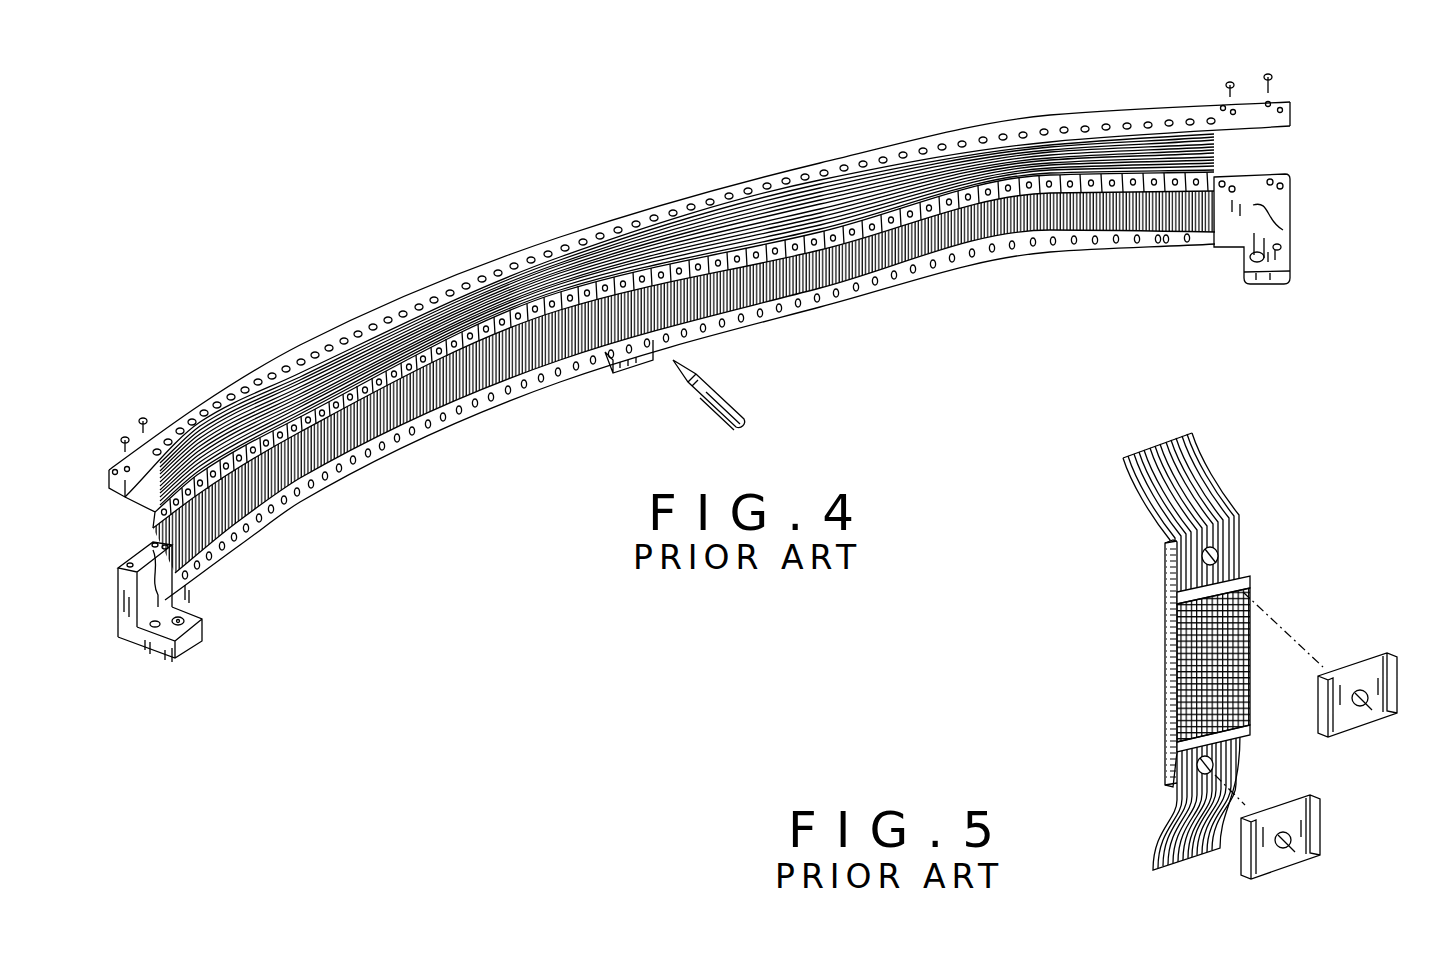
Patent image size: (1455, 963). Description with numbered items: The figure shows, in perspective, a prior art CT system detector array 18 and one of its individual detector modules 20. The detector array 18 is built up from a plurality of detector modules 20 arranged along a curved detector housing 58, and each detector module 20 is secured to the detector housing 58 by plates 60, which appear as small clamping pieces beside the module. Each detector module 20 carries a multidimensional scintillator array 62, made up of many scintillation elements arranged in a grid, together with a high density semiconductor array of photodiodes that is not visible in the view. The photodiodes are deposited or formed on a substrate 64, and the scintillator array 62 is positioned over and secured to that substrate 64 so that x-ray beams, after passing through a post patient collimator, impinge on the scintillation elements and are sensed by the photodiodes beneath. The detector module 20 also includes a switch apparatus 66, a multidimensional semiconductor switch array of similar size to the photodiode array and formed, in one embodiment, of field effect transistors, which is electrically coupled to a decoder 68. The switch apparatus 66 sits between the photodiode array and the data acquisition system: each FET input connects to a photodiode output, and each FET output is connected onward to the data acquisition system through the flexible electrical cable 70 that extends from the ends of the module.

In FIG. 4, the detector array 18 is at (656, 170).
In FIG. 4, the detector housing 58 is at (573, 232).
In FIG. 4, the detector module 20 is at (857, 268).
In FIG. 5, the detector module 20 is at (1323, 607).
In FIG. 5, the plate 60 is at (1396, 692).
In FIG. 5, the scintillator array 62 is at (1260, 636).
In FIG. 5, the substrate 64 is at (1163, 700).
In FIG. 5, the switch apparatus 66 is at (1176, 596).
In FIG. 5, the decoder 68 is at (1182, 600).
In FIG. 5, the flexible electrical cable 70 is at (1220, 490).